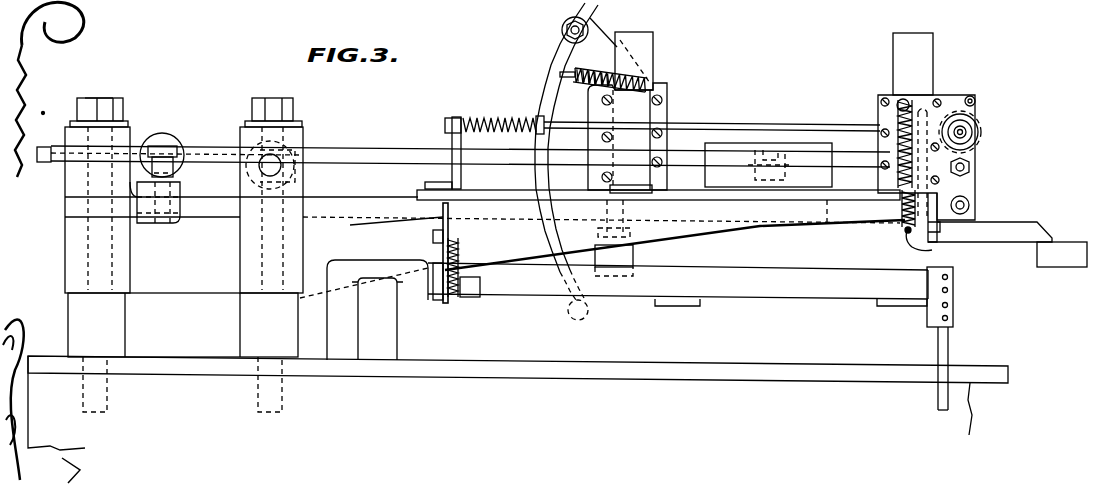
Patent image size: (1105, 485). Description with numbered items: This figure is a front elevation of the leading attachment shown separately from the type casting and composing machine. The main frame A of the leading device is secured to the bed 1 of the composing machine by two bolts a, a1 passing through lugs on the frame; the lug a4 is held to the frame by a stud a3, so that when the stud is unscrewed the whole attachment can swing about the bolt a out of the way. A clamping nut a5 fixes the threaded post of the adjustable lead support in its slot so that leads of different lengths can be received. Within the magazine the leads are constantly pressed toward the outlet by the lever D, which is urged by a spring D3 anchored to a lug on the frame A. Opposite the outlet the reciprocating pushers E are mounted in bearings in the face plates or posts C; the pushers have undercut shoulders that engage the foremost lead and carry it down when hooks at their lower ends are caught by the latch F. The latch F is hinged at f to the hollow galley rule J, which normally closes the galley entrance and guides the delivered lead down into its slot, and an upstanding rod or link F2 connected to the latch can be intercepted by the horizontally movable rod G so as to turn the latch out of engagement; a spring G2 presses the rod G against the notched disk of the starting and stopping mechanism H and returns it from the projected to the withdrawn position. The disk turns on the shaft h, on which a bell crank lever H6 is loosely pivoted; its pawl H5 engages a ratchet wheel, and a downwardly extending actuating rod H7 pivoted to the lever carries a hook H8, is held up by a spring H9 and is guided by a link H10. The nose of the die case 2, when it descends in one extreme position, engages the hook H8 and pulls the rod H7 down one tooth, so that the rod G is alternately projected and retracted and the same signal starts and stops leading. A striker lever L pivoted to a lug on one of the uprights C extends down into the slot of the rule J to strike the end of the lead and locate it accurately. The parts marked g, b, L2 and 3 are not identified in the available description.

The bed 1 is at (220, 372).
The main frame A is at (482, 243).
The bolt a is at (92, 99).
The bolt a1 is at (268, 99).
The stud a3 is at (120, 130).
The lug a4 is at (296, 120).
The clamping nut a5 is at (650, 258).
The lever D is at (350, 160).
The spring D3 is at (178, 148).
The post g is at (450, 122).
The spring G2 is at (512, 110).
The rod G is at (803, 130).
The face plates or posts C is at (668, 115).
The pushers E is at (642, 47).
The spring L2 is at (627, 74).
The lever L is at (567, 62).
The pivot bolt b is at (589, 23).
The starting and stopping mechanism H is at (940, 159).
The shaft h is at (980, 125).
The pawl H5 is at (962, 115).
The bell crank lever H6 is at (935, 115).
The actuating rod H7 is at (902, 218).
The hook H8 is at (926, 244).
The spring H9 is at (904, 232).
The link H10 is at (952, 192).
The die case 2 is at (948, 232).
The block 3 is at (1062, 255).
The latch F is at (834, 292).
The hinge f is at (480, 300).
The rod or link F2 is at (404, 253).
The galley rule J is at (739, 345).